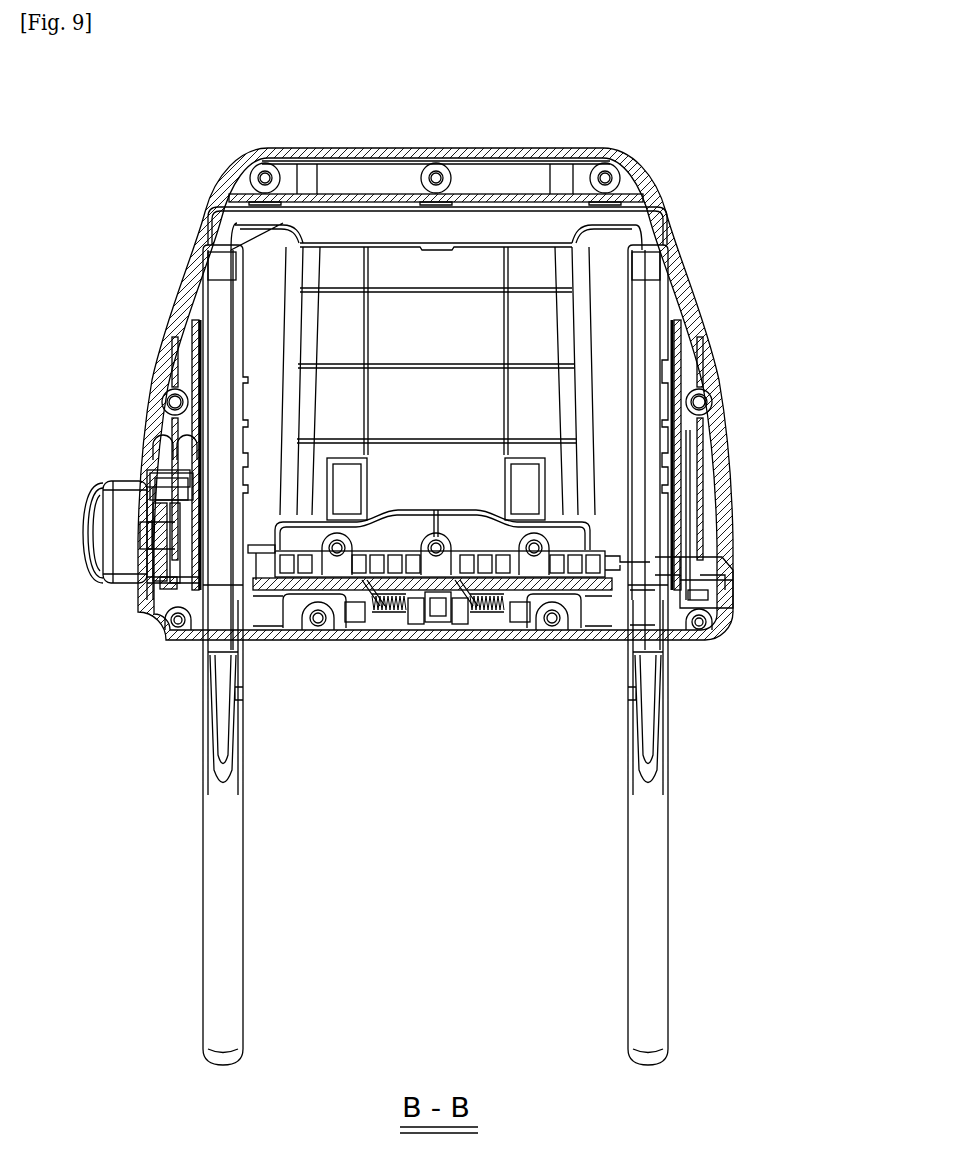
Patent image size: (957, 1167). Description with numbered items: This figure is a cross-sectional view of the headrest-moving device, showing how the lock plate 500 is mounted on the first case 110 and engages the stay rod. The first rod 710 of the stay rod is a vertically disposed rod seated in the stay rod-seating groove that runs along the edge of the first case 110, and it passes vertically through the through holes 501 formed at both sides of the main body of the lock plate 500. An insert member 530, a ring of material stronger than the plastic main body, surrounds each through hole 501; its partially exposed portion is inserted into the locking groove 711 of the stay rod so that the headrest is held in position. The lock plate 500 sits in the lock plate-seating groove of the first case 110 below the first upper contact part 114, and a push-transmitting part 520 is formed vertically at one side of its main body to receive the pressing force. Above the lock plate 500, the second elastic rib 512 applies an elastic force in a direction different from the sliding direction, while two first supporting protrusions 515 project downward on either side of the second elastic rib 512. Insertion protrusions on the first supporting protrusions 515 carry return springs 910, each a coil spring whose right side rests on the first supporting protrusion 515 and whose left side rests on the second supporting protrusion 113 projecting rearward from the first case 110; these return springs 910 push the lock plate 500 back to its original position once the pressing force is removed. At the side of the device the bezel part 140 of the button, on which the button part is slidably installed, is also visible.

The first case 110 is at (231, 140).
The first rod 710 is at (210, 358).
The locking groove 711 is at (243, 502).
The first upper contact part 114 is at (493, 577).
The lock plate 500 is at (692, 587).
The bezel part 140 is at (112, 592).
The push-transmitting part 520 is at (126, 590).
The through hole 501 is at (182, 590).
The insert member 530 is at (283, 598).
The first supporting protrusion 515 is at (360, 605).
The return spring 910 is at (405, 590).
The second elastic rib 512 is at (430, 585).
The second supporting protrusion 113 is at (507, 595).